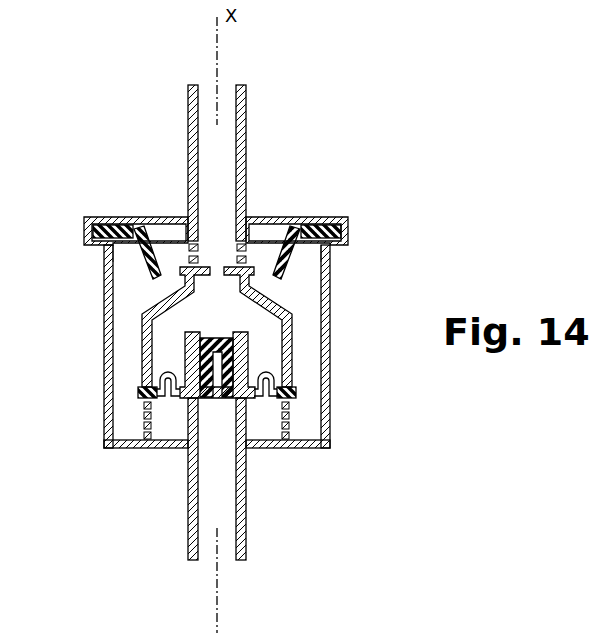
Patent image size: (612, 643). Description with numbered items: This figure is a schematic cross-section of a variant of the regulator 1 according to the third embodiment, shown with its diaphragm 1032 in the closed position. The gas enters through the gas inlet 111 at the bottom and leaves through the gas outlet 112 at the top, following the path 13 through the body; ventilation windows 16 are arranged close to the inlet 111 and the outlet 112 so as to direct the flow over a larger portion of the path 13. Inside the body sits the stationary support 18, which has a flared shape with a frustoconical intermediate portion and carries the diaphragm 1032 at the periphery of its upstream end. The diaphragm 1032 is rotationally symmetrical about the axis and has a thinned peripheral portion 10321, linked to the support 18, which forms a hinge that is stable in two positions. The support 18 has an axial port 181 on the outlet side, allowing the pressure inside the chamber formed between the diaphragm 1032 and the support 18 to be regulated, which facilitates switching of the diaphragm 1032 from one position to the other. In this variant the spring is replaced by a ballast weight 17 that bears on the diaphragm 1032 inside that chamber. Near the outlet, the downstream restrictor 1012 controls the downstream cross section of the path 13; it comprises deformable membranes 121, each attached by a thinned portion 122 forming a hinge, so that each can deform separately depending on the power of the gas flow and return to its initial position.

The regulator 1 is at (62, 182).
The path 13 is at (122, 337).
The ventilation windows 16 is at (186, 242).
The ballast weight 17 is at (242, 357).
The support 18 is at (152, 312).
The gas inlet 111 is at (207, 560).
The gas outlet 112 is at (207, 84).
The deformable membranes 121 is at (163, 272).
The thinned portion 122 is at (145, 232).
The axial port 181 is at (217, 256).
The downstream restrictor 1012 is at (138, 256).
The diaphragm 1032 is at (215, 398).
The thinned peripheral portion 10321 is at (162, 366).